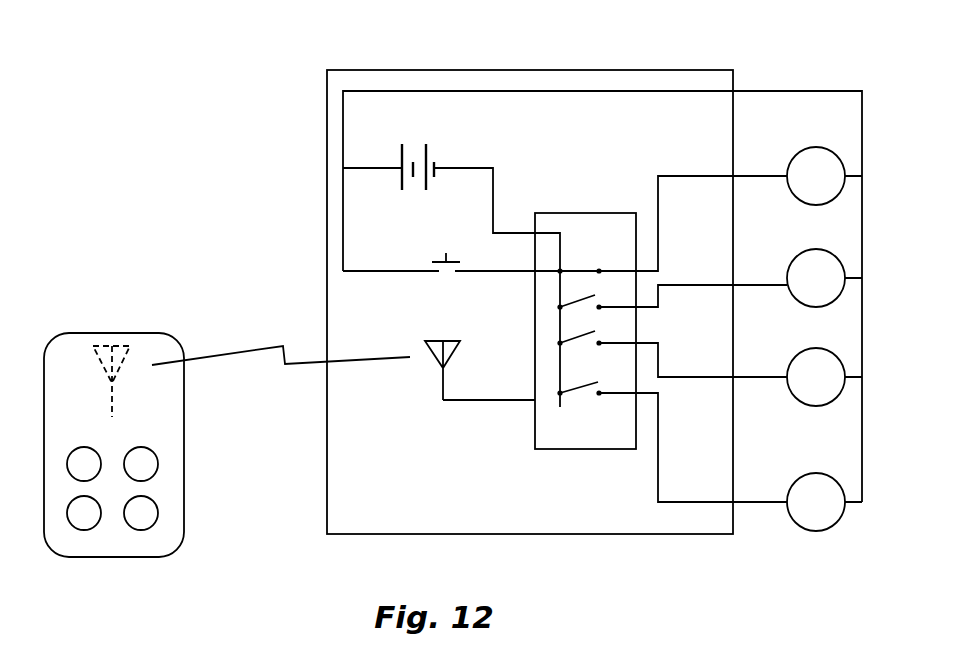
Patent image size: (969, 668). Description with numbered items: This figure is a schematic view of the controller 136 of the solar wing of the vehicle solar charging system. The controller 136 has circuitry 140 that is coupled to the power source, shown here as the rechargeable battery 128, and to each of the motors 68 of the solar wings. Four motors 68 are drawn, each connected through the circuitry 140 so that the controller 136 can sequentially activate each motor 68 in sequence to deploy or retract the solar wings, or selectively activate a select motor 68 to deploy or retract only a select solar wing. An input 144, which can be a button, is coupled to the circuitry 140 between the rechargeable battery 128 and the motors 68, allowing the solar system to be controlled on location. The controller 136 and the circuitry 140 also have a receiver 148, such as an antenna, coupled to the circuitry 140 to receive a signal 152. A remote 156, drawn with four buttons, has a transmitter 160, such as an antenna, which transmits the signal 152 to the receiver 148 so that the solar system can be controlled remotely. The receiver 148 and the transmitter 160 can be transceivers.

The circuitry 140 is at (608, 70).
The controller 136 is at (612, 534).
The rechargeable battery 128 is at (400, 152).
The input 144 is at (432, 268).
The receiver 148 is at (443, 368).
The motor 68 is at (822, 147).
The remote 156 is at (118, 552).
The transmitter 160 is at (97, 360).
The signal 152 is at (301, 366).